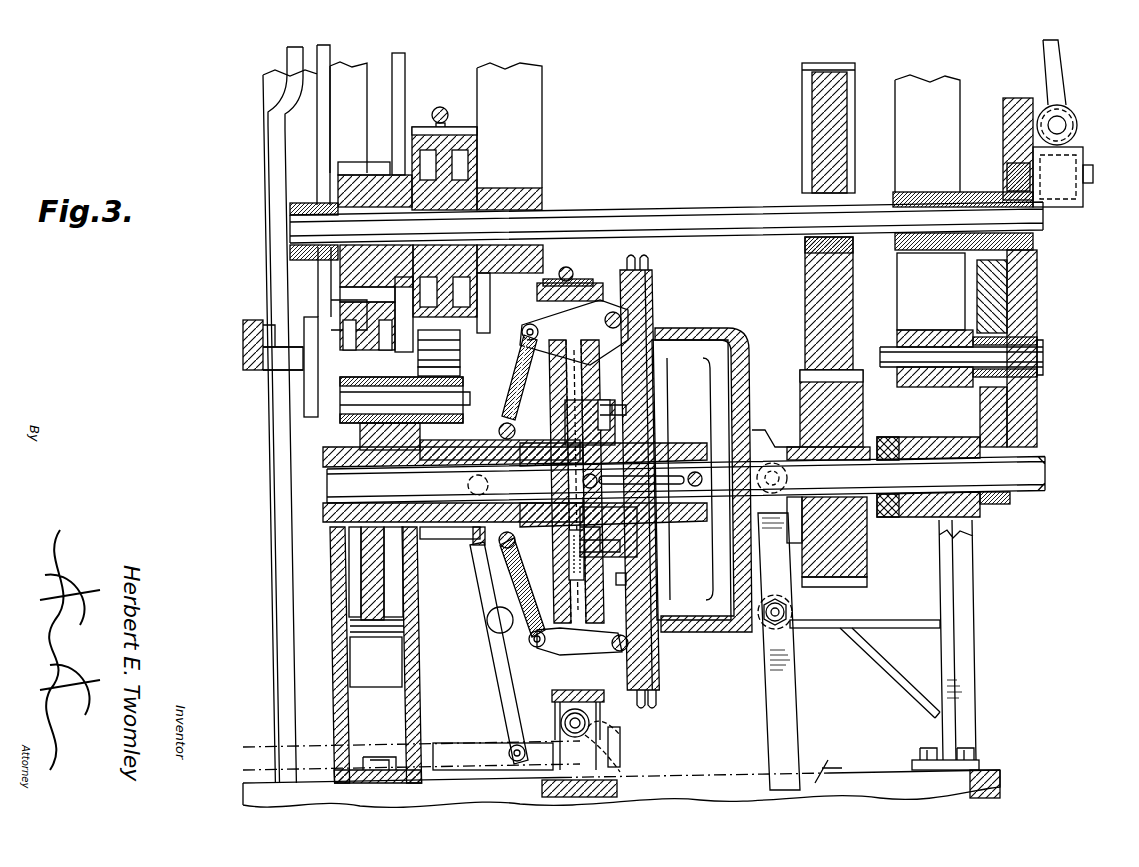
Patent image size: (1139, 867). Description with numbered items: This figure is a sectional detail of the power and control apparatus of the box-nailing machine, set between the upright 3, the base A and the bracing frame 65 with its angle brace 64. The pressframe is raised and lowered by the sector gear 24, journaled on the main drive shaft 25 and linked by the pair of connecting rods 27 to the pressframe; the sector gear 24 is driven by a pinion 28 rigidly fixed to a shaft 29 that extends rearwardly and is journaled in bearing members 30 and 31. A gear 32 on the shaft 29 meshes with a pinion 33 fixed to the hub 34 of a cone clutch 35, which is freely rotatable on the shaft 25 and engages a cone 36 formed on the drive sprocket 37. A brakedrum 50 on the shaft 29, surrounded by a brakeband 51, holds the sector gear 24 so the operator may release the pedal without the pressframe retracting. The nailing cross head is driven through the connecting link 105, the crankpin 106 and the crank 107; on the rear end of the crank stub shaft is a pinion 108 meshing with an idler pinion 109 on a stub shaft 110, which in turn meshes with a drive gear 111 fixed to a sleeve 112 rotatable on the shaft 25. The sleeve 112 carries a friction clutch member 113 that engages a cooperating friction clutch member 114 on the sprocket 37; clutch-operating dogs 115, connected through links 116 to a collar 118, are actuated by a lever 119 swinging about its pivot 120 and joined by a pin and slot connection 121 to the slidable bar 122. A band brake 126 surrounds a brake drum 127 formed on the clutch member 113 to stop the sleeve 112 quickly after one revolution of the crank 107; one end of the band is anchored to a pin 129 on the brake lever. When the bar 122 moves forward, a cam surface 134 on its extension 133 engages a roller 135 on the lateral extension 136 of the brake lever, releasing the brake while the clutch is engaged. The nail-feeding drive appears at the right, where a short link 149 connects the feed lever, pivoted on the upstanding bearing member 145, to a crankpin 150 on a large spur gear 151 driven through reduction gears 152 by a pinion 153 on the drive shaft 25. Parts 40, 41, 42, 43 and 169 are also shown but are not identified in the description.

The upright 3 is at (263, 90).
The connecting link 105 is at (270, 165).
The crankpin 106 is at (245, 356).
The crank 107 is at (305, 400).
The connecting rods 27 is at (395, 118).
The pinion 28 is at (356, 170).
The bearing member 30 is at (300, 203).
The brakeband 51 is at (447, 118).
The brakedrum 50 is at (470, 143).
The bracing frame 65 is at (525, 153).
The shaft 29 is at (290, 230).
The angle brace 64 is at (528, 258).
The pinion 108 is at (455, 355).
The idler pinion 109 is at (455, 375).
The stub shaft 110 is at (458, 392).
The sector gear 24 is at (355, 440).
The block 169 is at (380, 672).
The main drive shaft 25 is at (330, 488).
The pin 43 is at (788, 479).
The brake 126 is at (582, 280).
The friction clutch member 113 is at (606, 283).
The drive sprocket 37 is at (652, 302).
The clutch-operating dogs 115 is at (648, 262).
The cooperating friction clutch member 114 is at (600, 590).
The cone 36 is at (690, 357).
The cone clutch 35 is at (750, 372).
The hub 34 is at (795, 440).
The collar 118 is at (517, 590).
The links 116 is at (516, 603).
The pivot 120 is at (496, 625).
The lever 119 is at (502, 690).
The pin and slot connection 121 is at (512, 750).
The drive gear 111 is at (445, 530).
The sleeve 112 is at (470, 536).
The slidable bar 122 is at (488, 765).
The brake drum 127 is at (598, 700).
The pin 129 is at (562, 727).
The cam surface 134 is at (614, 732).
The extension 133 is at (618, 748).
The roller 135 is at (618, 766).
The lateral extension 136 is at (612, 778).
The gear 32 is at (806, 161).
The pinion 33 is at (805, 403).
The support bar 40 is at (785, 722).
The bolt 42 is at (786, 613).
The cross bar 41 is at (838, 615).
The upstanding bearing member 145 is at (898, 113).
The bearing member 31 is at (931, 193).
The short link 149 is at (1062, 82).
The crankpin 150 is at (1086, 170).
The spur gear 151 is at (1036, 243).
The reduction gears 152 is at (1036, 345).
The pinion 153 is at (1010, 450).
The base A is at (828, 762).